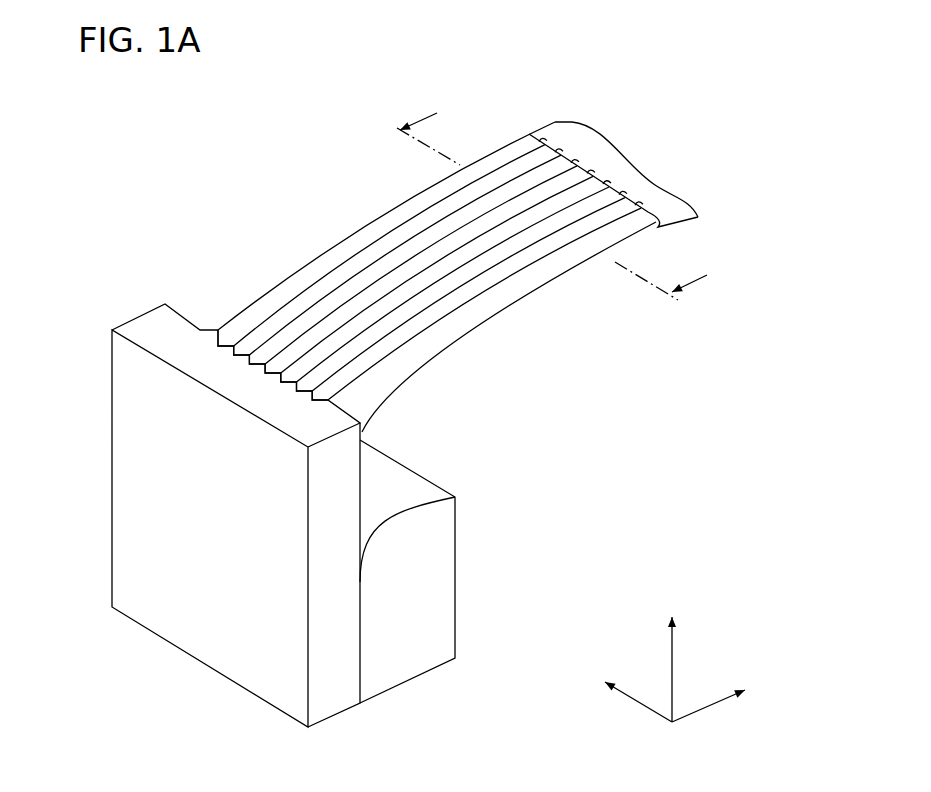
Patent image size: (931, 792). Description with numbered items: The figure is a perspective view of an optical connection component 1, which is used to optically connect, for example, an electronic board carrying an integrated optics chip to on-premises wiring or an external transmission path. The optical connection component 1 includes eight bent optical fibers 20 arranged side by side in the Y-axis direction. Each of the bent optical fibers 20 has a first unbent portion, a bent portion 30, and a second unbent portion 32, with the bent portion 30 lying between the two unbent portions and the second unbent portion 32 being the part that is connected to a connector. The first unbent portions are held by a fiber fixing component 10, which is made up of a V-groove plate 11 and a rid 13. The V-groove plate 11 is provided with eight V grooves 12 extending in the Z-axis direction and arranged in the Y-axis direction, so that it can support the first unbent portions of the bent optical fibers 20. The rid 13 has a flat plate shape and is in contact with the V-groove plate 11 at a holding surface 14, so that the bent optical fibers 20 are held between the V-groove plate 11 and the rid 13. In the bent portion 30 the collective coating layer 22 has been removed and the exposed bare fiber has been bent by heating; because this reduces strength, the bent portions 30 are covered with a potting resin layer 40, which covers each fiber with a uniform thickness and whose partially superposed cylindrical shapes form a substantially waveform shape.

The optical connection component 1 is at (172, 235).
The fiber fixing component 10 is at (143, 648).
The V-groove plate 11 is at (128, 492).
The V grooves 12 is at (200, 330).
The rid 13 is at (437, 585).
The holding surface 14 is at (362, 633).
The bent optical fibers 20 is at (540, 310).
The collective coating layer 22 is at (632, 168).
The bent portion 30 is at (258, 303).
The second unbent portion 32 is at (397, 203).
The resin layer 40 is at (515, 173).